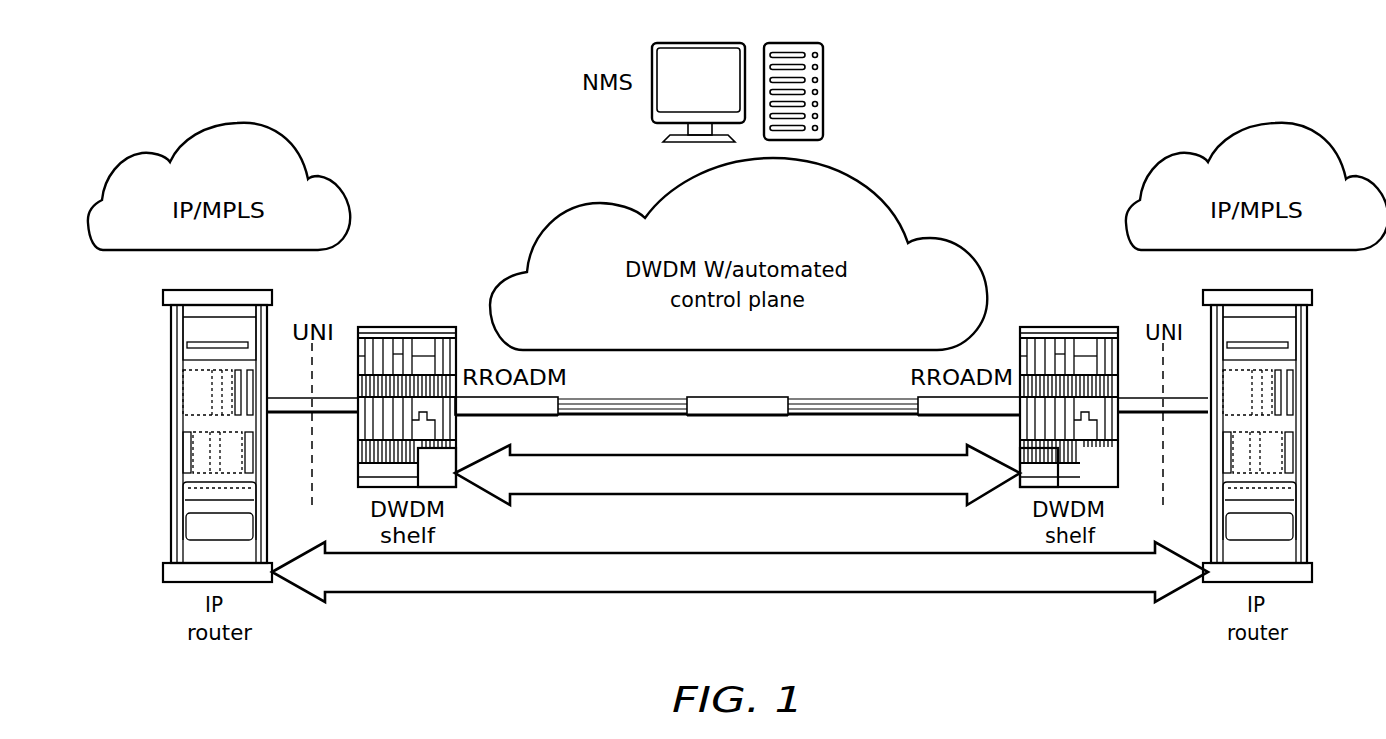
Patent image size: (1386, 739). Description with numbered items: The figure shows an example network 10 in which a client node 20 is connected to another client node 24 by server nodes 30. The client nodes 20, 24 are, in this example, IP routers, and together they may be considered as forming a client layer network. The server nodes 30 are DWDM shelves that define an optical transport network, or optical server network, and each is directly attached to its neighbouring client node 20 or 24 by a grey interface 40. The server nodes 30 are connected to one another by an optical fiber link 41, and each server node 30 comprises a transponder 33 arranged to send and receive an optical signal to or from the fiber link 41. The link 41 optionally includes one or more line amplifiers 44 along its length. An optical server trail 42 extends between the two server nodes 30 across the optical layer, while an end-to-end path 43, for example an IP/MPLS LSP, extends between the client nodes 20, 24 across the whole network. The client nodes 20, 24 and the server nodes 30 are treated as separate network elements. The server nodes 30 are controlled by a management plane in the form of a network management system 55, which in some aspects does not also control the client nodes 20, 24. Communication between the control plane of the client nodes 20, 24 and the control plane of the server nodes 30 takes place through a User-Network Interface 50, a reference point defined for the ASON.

The network 10 is at (432, 93).
The client node 20 is at (169, 339).
The client node 24 is at (1313, 338).
The server node 30 is at (430, 326).
The transponder 33 is at (453, 491).
The grey interface 40 is at (291, 414).
The link 41 is at (862, 416).
The optical server trail 42 is at (735, 496).
The end-to-end path 43 is at (737, 593).
The line amplifier 44 is at (723, 393).
The User-Network Interface (UNI) 50 is at (315, 365).
The network management system (NMS) 55 is at (824, 61).